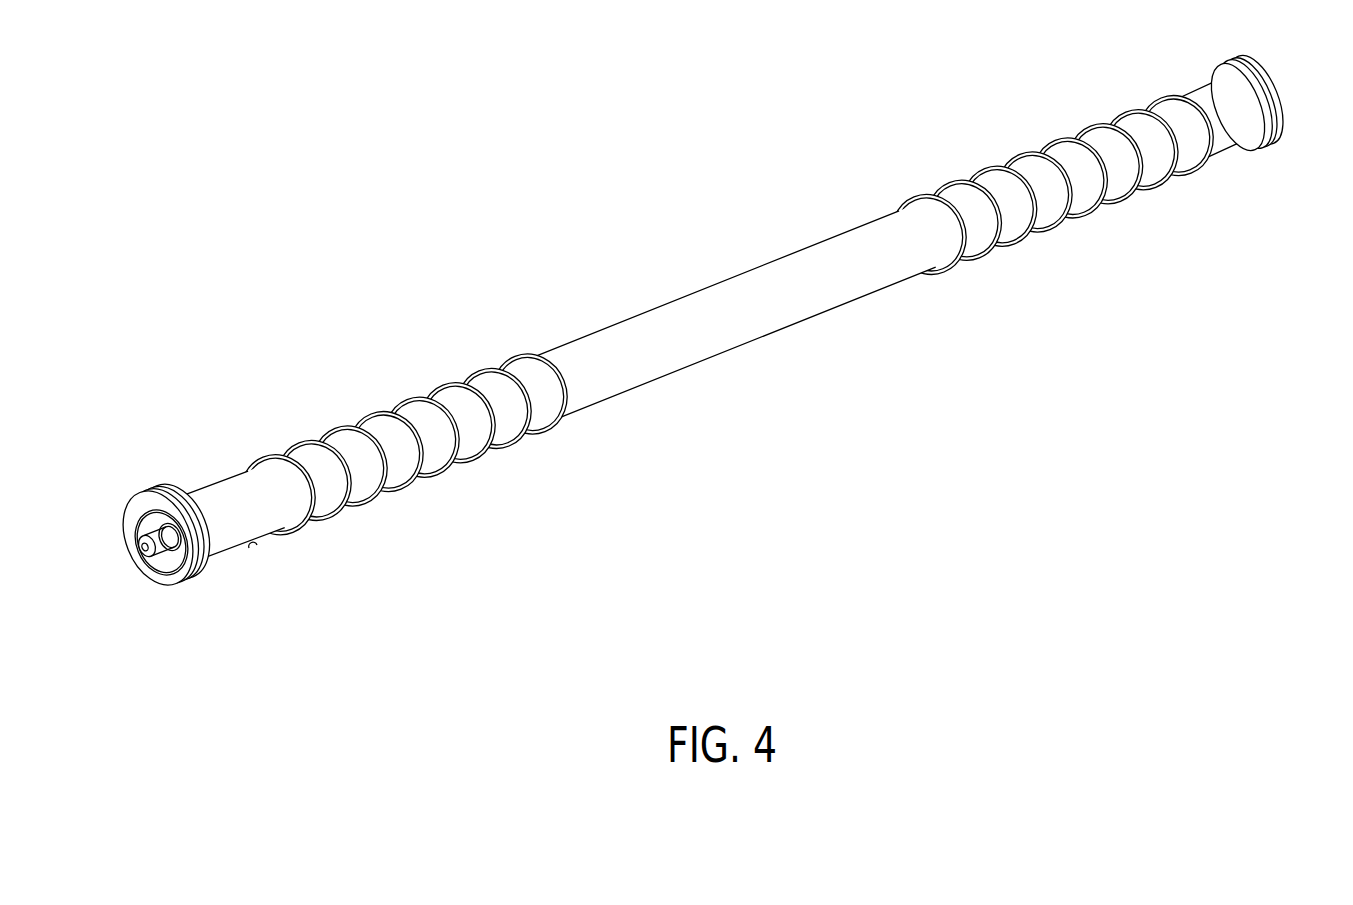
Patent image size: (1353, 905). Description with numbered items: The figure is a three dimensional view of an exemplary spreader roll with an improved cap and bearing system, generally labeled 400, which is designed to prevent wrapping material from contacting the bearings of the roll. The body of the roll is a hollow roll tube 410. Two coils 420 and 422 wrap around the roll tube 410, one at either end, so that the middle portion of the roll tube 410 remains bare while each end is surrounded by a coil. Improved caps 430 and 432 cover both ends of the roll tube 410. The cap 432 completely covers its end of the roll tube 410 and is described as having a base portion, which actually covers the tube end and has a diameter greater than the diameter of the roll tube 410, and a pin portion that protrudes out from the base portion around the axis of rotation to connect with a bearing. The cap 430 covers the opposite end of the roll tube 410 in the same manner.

The spreader roll with improved cap and bearing system 400 is at (702, 340).
The roll tube 410 is at (685, 327).
The coil 420 is at (552, 423).
The coil 422 is at (975, 258).
The cap 430 is at (190, 562).
The cap 432 is at (1247, 148).